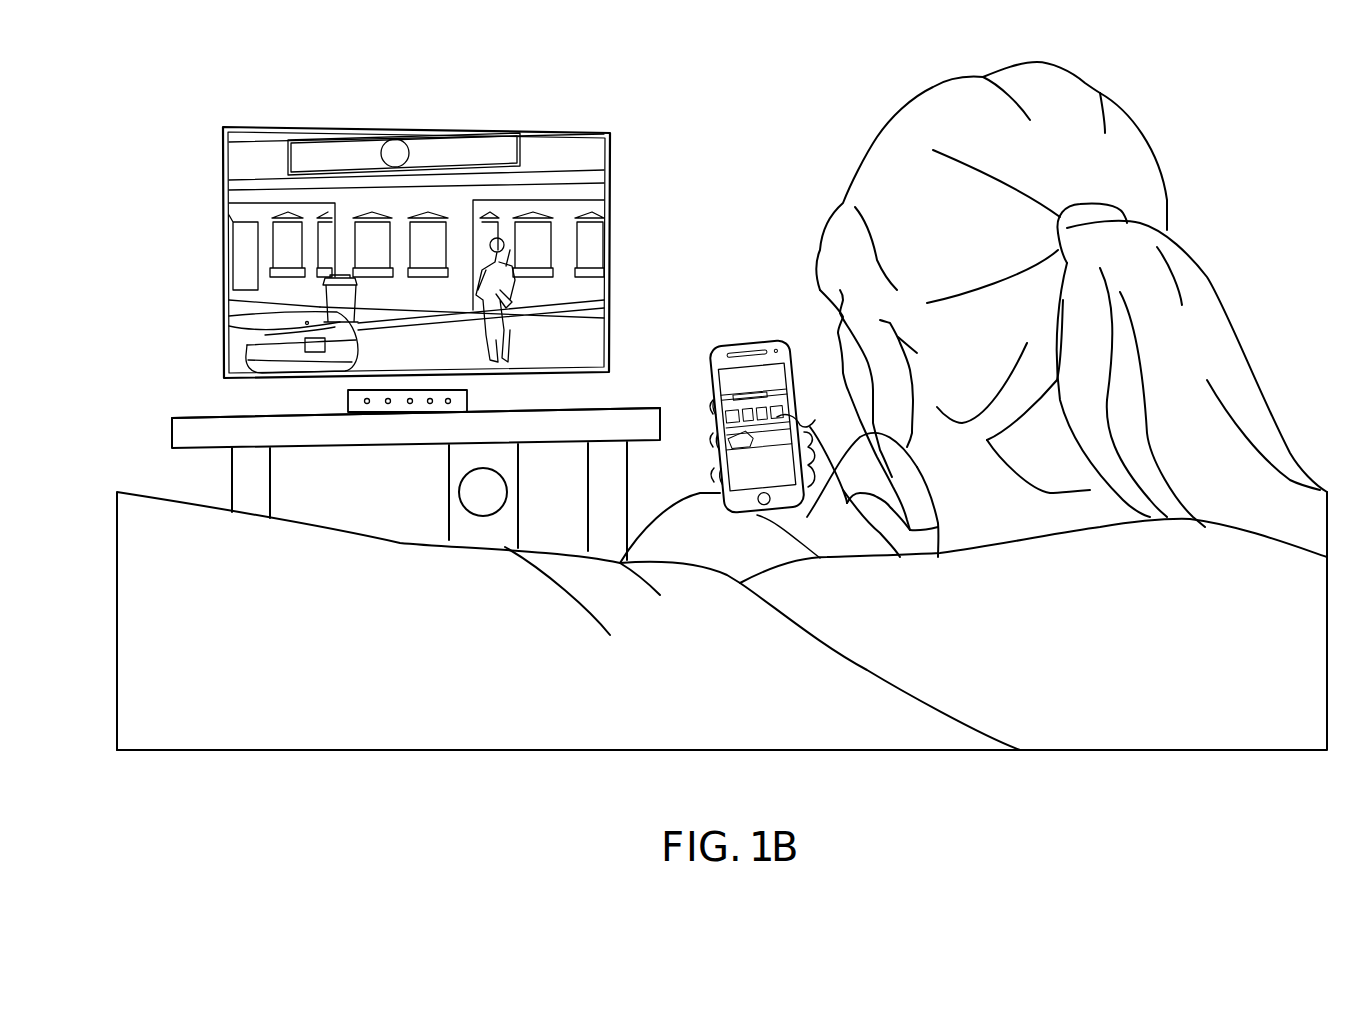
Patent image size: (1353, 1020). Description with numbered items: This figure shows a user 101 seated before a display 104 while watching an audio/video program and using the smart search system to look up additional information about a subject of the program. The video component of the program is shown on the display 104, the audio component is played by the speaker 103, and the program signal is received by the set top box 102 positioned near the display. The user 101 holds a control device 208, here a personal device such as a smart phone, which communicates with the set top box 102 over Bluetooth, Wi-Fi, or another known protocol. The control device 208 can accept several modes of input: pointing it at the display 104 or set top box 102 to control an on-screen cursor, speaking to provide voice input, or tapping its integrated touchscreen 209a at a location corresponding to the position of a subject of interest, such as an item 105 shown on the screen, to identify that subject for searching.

The user 101 is at (1143, 197).
The set top box 102 is at (348, 397).
The speaker 103 is at (448, 465).
The display 104 is at (220, 185).
The object in video content (car) 105 is at (240, 342).
The control device 208 is at (745, 346).
The touchscreen 209a is at (728, 400).